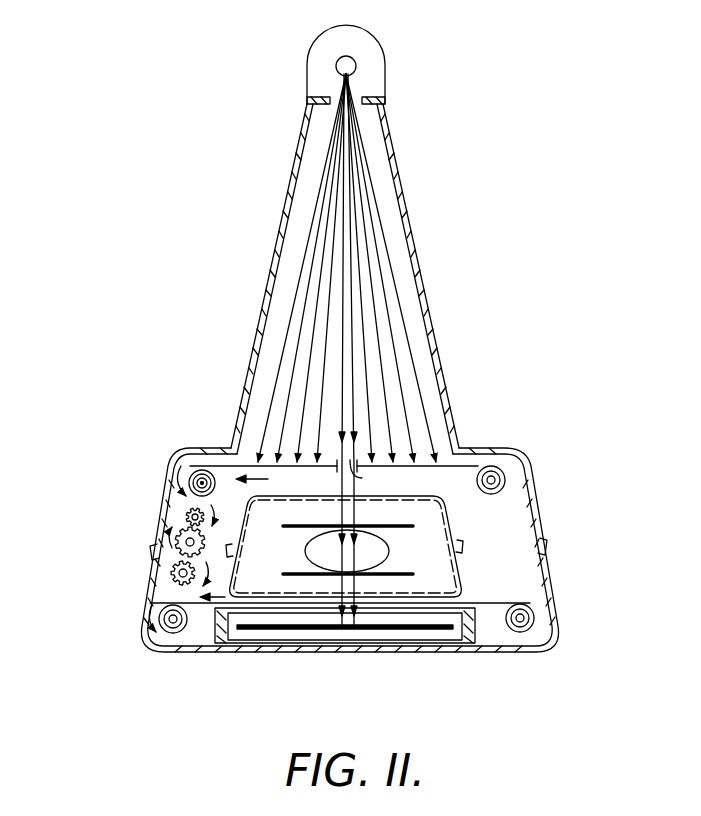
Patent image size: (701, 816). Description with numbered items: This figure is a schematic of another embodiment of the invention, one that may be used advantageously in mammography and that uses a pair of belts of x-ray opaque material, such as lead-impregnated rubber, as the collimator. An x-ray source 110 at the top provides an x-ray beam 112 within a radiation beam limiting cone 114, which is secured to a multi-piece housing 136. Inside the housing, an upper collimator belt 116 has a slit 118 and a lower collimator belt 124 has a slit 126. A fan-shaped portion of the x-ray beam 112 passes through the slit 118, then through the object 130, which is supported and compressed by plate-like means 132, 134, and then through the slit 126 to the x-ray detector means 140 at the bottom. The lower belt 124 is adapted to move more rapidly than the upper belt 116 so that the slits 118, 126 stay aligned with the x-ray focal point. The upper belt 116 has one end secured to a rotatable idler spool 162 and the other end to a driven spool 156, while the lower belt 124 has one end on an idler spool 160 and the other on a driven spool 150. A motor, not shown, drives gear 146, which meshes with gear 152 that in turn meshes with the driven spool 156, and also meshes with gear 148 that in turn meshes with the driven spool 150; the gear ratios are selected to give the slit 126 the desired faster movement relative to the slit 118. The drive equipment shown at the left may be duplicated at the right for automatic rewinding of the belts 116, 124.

The x-ray source 110 is at (348, 66).
The x-ray beam 112 is at (352, 224).
The radiation beam limiting cone 114 is at (432, 305).
The upper collimator belt 116 is at (468, 462).
The slit 118 is at (362, 478).
The lower collimator belt 124 is at (410, 606).
The slit 126 is at (348, 630).
The object 130 is at (375, 549).
The plate-like means 132 is at (415, 521).
The plate-like means 134 is at (415, 579).
The multi-piece housing 136 is at (530, 485).
The x-ray detector means 140 is at (275, 628).
The gear 146 is at (183, 548).
The gear 148 is at (178, 580).
The driven spool 150 is at (173, 633).
The gear 152 is at (186, 514).
The driven spool 156 is at (190, 470).
The idler spool 160 is at (520, 632).
The rotatable idler spool 162 is at (497, 470).